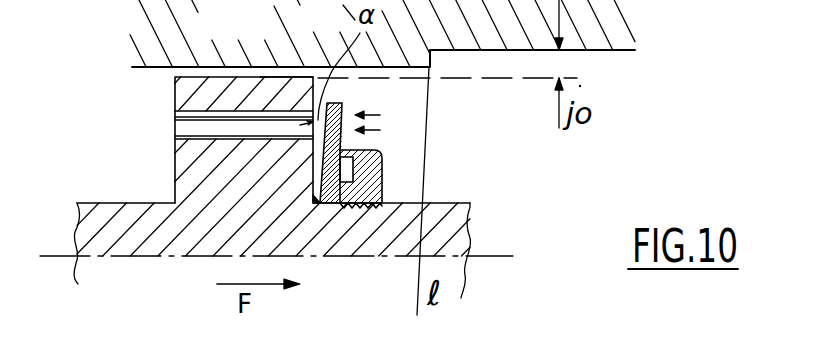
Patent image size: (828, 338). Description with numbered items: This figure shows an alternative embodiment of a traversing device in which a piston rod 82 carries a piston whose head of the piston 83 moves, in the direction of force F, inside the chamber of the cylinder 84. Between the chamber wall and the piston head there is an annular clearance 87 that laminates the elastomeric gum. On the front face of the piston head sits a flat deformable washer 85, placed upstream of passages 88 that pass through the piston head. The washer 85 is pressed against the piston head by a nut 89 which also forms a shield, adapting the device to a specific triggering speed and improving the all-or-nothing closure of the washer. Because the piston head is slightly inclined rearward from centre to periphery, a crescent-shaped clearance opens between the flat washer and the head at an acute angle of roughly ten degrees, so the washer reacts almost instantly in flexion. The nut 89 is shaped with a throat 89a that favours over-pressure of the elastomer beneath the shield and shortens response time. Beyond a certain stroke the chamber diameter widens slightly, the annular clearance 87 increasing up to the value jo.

The piston rod 82 is at (99, 217).
The head of the piston 83 is at (198, 173).
The chamber of the cylinder 84 is at (382, 33).
The deformable washer 85 is at (342, 104).
The annular clearance 87 is at (275, 73).
The passages 88 is at (195, 128).
The nut 89 is at (380, 168).
The throat 89a is at (346, 146).